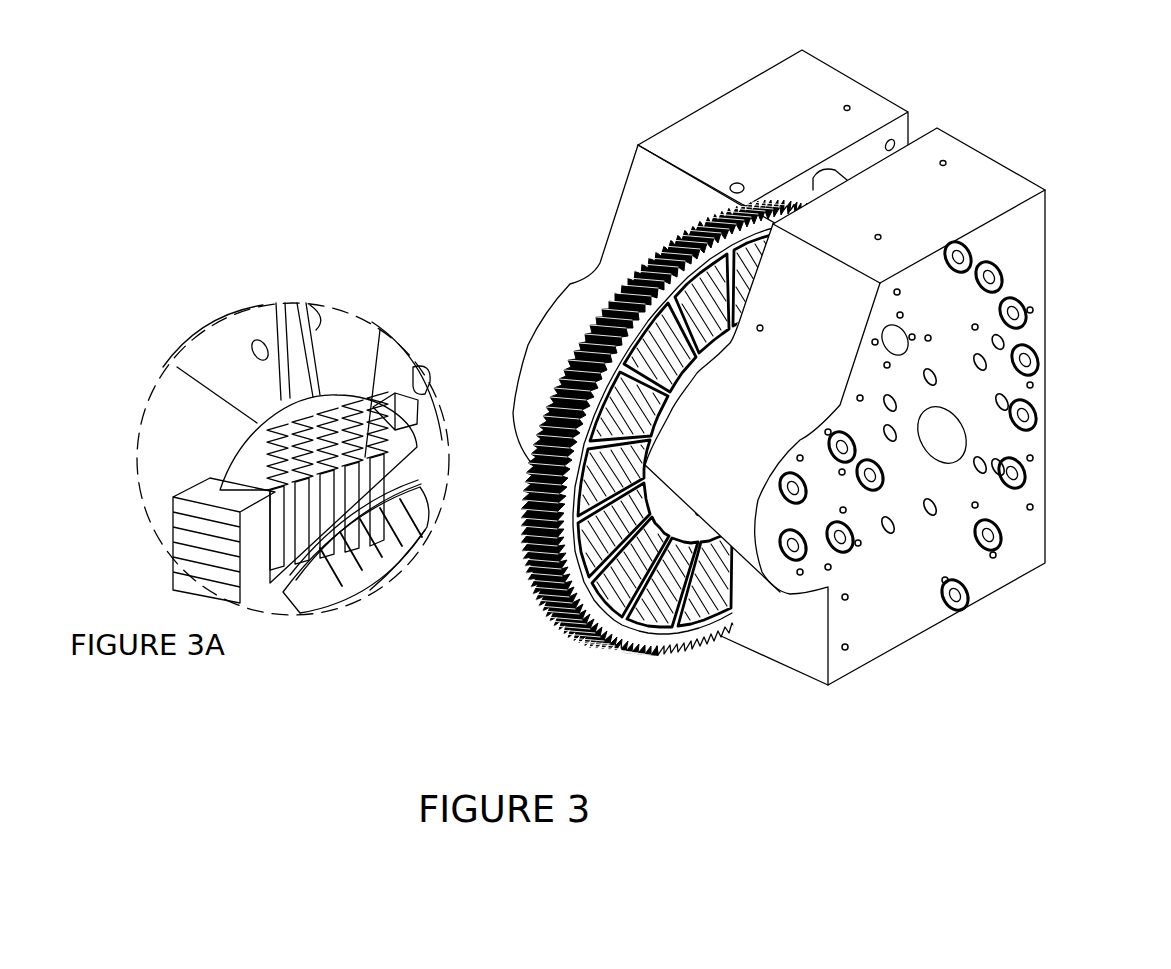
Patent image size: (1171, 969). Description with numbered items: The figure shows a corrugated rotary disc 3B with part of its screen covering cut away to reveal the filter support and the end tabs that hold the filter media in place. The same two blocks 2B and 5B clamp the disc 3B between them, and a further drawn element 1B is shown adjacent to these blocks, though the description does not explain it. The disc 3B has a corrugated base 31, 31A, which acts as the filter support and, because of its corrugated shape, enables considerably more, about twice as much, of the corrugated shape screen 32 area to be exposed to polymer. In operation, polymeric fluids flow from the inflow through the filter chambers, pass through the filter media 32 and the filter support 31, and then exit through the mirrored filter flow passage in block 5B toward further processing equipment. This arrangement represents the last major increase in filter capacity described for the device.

In FIG. 3, the block 5B is at (794, 97).
In FIG. 3, the block 2B is at (938, 193).
In FIG. 3, the front cover plate 1B is at (942, 435).
In FIG. 3, the corrugated base 31 is at (660, 342).
In FIG. 3, the disc 3B is at (587, 610).
In FIG. 3A, the corrugated base 31A is at (260, 445).
In FIG. 3A, the corrugated shape screen 32 is at (282, 530).